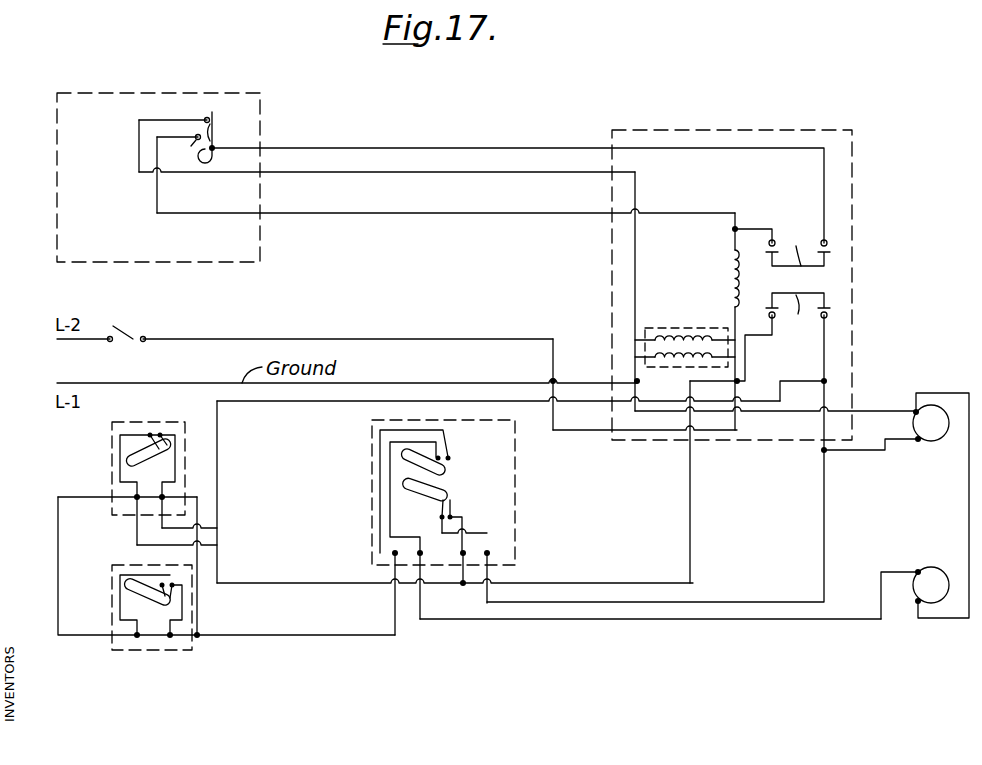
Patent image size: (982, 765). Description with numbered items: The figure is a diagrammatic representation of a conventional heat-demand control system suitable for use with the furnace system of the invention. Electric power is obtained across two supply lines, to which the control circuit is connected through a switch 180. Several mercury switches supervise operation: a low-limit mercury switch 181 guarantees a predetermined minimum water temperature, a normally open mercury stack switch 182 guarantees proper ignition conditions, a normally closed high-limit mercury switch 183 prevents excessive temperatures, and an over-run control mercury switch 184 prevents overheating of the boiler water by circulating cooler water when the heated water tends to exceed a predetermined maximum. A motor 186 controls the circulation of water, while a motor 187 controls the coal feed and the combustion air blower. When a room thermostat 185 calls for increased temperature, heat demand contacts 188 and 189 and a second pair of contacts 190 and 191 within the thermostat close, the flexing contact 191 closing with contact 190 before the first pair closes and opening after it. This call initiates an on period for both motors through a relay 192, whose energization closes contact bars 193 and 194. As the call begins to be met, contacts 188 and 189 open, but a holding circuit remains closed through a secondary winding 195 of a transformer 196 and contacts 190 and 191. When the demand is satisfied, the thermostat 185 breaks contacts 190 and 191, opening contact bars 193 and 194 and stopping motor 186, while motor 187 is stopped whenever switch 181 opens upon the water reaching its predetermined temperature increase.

The switch 180 is at (305, 348).
The low-limit mercury switch 181 is at (160, 647).
The normally open mercury stack switch 182 is at (112, 452).
The normally closed high-limit mercury switch 183 is at (449, 465).
The over-run control mercury switch 184 is at (447, 495).
The room thermostat 185 is at (62, 175).
The motor 186 is at (931, 442).
The motor 187 is at (932, 567).
The heat demand contact 188 is at (179, 153).
The heat demand contact 189 is at (214, 132).
The contact 190 is at (206, 118).
The contact 191 is at (221, 105).
The relay 192 is at (734, 283).
The contact bar 193 is at (798, 244).
The contact bar 194 is at (798, 317).
The secondary winding 195 is at (683, 336).
The transformer 196 is at (652, 311).